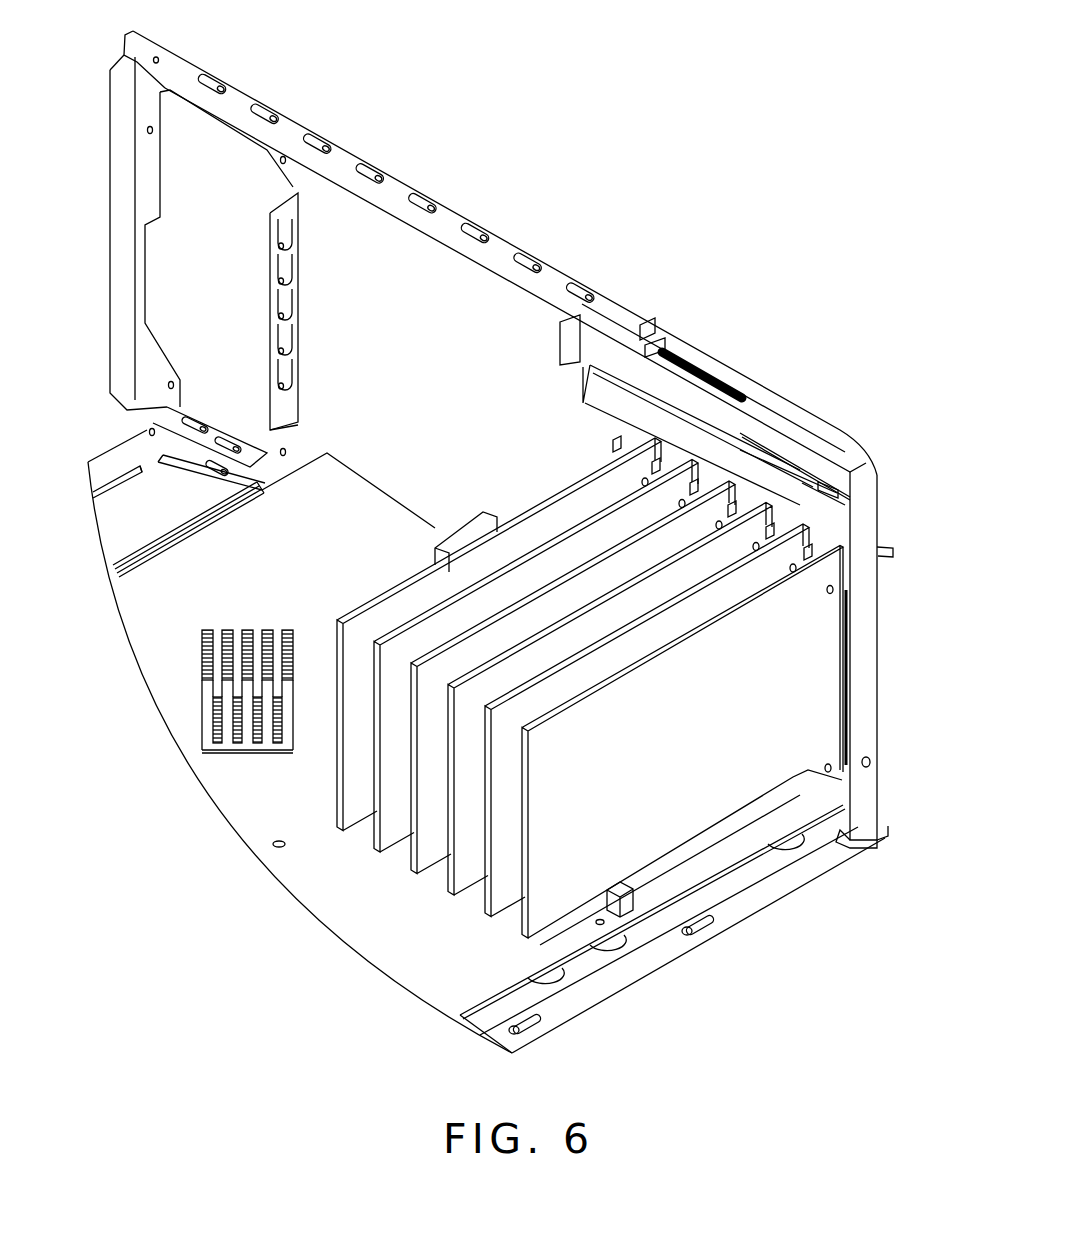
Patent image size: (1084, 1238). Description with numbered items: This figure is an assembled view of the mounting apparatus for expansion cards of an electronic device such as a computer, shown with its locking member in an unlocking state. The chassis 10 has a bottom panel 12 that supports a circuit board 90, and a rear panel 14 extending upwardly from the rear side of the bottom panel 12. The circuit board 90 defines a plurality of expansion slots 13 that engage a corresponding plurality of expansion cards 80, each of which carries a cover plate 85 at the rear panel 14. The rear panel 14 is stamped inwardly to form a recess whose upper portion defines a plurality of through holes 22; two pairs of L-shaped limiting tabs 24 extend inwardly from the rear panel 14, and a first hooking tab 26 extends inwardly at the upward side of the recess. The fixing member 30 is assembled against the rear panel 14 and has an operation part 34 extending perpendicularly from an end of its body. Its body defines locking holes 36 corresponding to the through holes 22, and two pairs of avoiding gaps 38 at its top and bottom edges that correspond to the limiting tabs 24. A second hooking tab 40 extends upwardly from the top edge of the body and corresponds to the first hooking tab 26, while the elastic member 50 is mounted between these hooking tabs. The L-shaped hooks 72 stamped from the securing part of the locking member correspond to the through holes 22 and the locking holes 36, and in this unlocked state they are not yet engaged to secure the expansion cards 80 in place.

The chassis 10 is at (224, 60).
The bottom panel 12 is at (130, 520).
The expansion slots 13 is at (633, 873).
The rear panel 14 is at (148, 97).
The through holes 22 is at (648, 347).
The L-shaped limiting tabs 24 is at (785, 470).
The first hooking tab 26 is at (656, 345).
The fixing member 30 is at (588, 293).
The operation part 34 is at (567, 335).
The locking holes 36 is at (835, 500).
The avoiding gaps 38 is at (802, 483).
The second hooking tab 40 is at (748, 407).
The elastic member 50 is at (690, 364).
The L-shaped hooks 72 is at (852, 482).
The expansion cards 80 is at (550, 888).
The cover plates 85 is at (848, 600).
The circuit board 90 is at (382, 905).